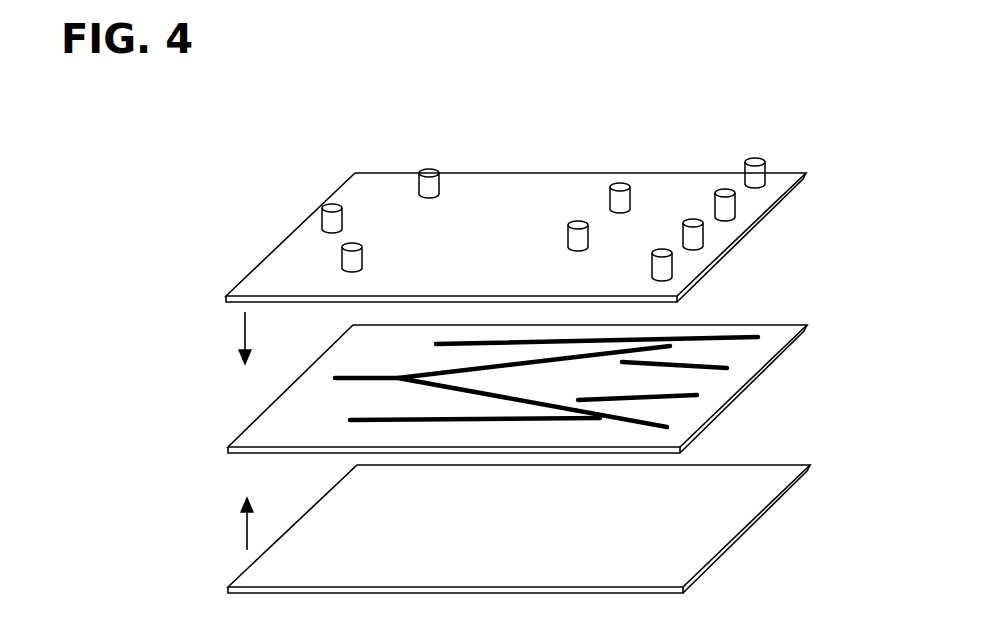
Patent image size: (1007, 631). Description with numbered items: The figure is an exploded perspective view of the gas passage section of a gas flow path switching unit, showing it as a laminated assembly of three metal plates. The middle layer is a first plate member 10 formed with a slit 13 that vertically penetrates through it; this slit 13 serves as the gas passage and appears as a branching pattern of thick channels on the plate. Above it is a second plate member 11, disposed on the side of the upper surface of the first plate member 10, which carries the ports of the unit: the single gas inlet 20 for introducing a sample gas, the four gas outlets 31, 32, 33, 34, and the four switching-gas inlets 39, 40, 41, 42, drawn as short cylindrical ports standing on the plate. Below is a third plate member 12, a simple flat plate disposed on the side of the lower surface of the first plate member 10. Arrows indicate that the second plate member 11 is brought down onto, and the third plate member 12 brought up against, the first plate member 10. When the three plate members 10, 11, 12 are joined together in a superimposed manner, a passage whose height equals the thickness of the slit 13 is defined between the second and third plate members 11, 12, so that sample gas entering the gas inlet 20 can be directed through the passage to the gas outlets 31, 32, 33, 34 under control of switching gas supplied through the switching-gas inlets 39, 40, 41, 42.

The first plate member 10 is at (725, 387).
The second plate member 11 is at (740, 227).
The third plate member 12 is at (733, 527).
The slit 13 is at (713, 345).
The gas inlet 20 is at (327, 215).
The gas outlet 31 is at (765, 167).
The gas outlet 32 is at (735, 205).
The gas outlet 33 is at (705, 238).
The gas outlet 34 is at (672, 267).
The switching-gas inlet 39 is at (417, 182).
The switching-gas inlet 40 is at (610, 195).
The switching-gas inlet 41 is at (567, 230).
The switching-gas inlet 42 is at (343, 258).